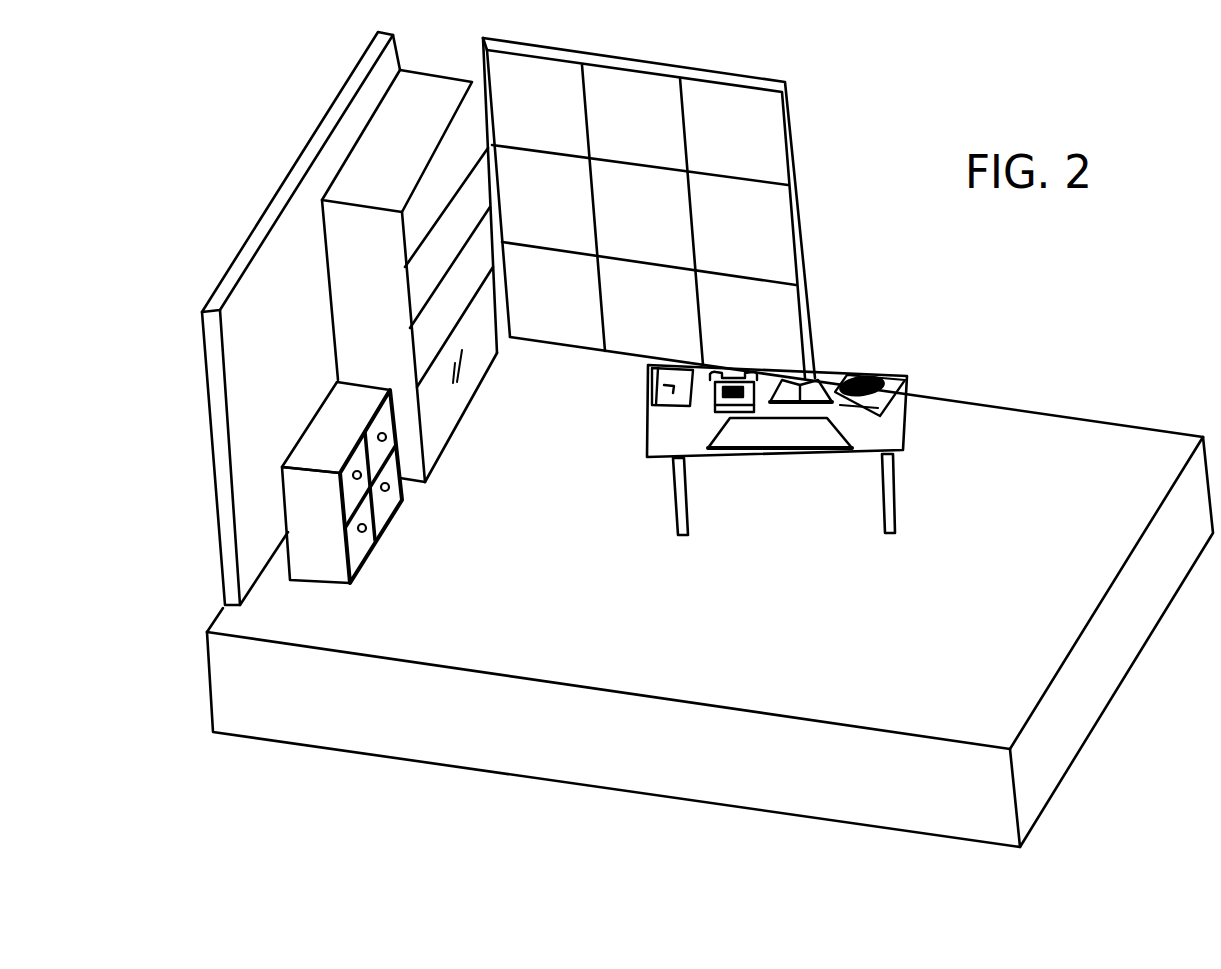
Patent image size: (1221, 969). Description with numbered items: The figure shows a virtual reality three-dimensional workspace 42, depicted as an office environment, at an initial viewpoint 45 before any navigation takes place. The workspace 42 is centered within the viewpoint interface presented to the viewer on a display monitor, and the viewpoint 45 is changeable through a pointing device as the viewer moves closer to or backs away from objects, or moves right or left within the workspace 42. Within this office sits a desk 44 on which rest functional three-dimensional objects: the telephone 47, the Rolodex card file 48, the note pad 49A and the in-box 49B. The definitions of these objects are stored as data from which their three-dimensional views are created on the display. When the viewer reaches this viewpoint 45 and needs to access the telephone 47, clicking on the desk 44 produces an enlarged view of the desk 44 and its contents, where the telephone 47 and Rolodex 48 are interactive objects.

The workspace 42 is at (607, 680).
The desk 44 is at (903, 450).
The viewpoint 45 is at (497, 535).
The telephone 47 is at (737, 376).
The Rolodex card file 48 is at (880, 385).
The note pad 49A is at (773, 433).
The in-box 49B is at (652, 380).